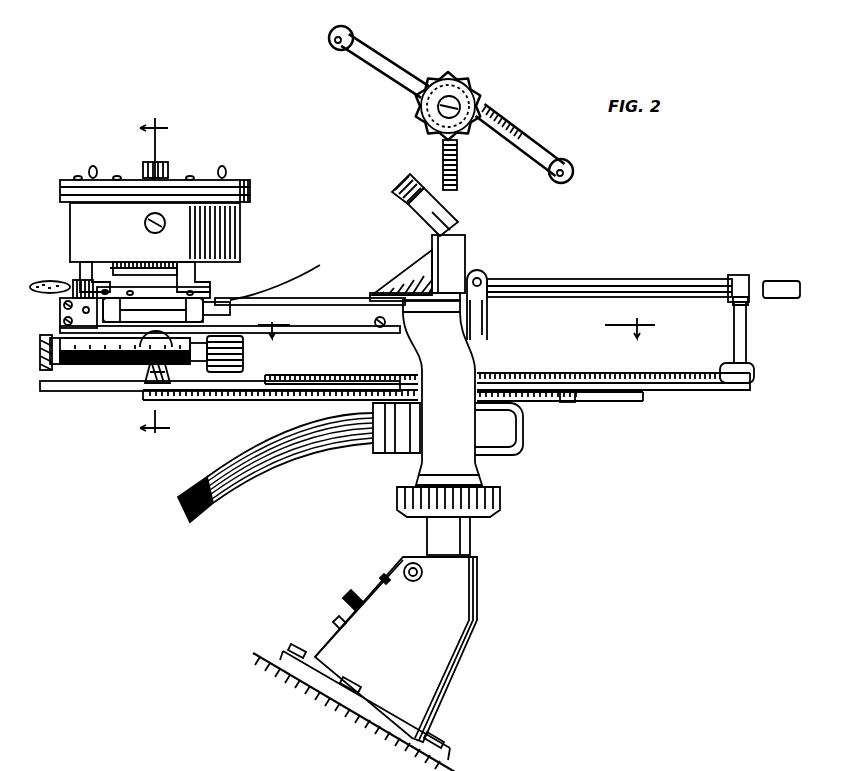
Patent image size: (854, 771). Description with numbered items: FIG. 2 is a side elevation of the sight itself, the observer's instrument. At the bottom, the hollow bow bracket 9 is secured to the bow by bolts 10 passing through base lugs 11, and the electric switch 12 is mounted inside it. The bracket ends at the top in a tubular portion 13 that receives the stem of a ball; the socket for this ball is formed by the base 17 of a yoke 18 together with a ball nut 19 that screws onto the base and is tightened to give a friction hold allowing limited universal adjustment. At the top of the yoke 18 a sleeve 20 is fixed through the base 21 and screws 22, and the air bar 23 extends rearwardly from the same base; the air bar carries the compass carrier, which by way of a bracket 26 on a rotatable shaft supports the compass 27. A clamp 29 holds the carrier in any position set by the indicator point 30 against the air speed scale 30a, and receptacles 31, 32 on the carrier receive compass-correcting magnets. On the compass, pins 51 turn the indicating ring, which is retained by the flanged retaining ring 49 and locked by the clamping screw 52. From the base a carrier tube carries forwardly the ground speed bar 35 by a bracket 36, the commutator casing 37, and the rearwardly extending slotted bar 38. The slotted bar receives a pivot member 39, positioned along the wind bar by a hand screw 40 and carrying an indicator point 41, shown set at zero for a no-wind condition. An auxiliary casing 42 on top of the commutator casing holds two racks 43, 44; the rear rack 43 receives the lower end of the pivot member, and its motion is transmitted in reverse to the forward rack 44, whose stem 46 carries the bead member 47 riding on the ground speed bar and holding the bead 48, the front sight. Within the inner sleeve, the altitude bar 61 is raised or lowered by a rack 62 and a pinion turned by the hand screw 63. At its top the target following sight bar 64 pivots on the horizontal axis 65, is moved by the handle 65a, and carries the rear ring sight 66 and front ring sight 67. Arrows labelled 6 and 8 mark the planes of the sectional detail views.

The section line 6 is at (464, 330).
The section line 8 is at (155, 273).
The bow bracket 9 is at (476, 630).
The bolts 10 is at (308, 663).
The base lugs 11 is at (275, 688).
The electric switch 12 is at (342, 606).
The tubular portion 13 is at (465, 540).
The base 17 is at (480, 480).
The yoke 18 is at (450, 420).
The ball nut 19 is at (500, 512).
The sleeve 20 is at (462, 262).
The base 21 is at (486, 290).
The screws 22 is at (398, 278).
The air bar 23 is at (337, 324).
The bracket 26 is at (215, 282).
The compass 27 is at (240, 228).
The clamp 29 is at (48, 280).
The indicator point 30 is at (63, 307).
The air speed scale 30a is at (283, 274).
The receptacles 31 is at (100, 272).
The receptacles 32 is at (230, 306).
The ground speed bar 35 is at (625, 297).
The bracket 36 is at (486, 318).
The commutator casing 37 is at (512, 440).
The slotted bar 38 is at (140, 393).
The pivot member 39 is at (110, 364).
The hand screw 40 is at (243, 355).
The indicator point 41 is at (170, 375).
The auxiliary casing 42 is at (492, 372).
The rack 43 is at (576, 397).
The rack 44 is at (662, 391).
The stem 46 is at (746, 335).
The bead member 47 is at (742, 275).
The bead 48 is at (733, 302).
The flanged retaining ring 49 is at (250, 191).
The pins 51 is at (97, 170).
The clamping screw 52 is at (168, 170).
The altitude bar 61 is at (458, 160).
The rack 62 is at (458, 178).
The hand screw 63 is at (405, 190).
The target following sight bar 64 is at (508, 128).
The horizontal axis 65 is at (468, 95).
The handle 65a is at (450, 95).
The rear ring sight 66 is at (338, 50).
The front ring sight 67 is at (573, 170).